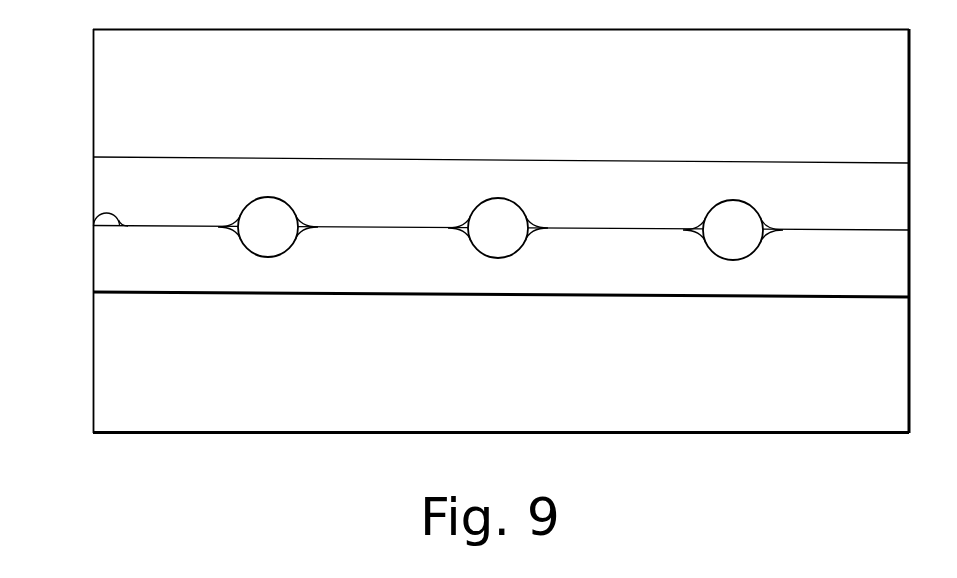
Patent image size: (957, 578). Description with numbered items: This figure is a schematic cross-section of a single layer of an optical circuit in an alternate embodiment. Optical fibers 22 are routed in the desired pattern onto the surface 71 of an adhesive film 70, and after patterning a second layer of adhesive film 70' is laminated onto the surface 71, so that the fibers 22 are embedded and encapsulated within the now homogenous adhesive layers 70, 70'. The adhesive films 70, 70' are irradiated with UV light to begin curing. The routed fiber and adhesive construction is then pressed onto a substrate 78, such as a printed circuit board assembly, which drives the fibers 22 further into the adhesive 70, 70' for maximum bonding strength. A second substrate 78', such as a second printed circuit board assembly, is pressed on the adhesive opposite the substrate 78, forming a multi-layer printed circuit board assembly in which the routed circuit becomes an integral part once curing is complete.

The optical fiber 22 is at (292, 250).
The adhesive film 70 is at (457, 298).
The second layer of adhesive film 70' is at (458, 184).
The surface 71 is at (90, 215).
The substrate 78 is at (462, 399).
The second substrate 78' is at (459, 88).